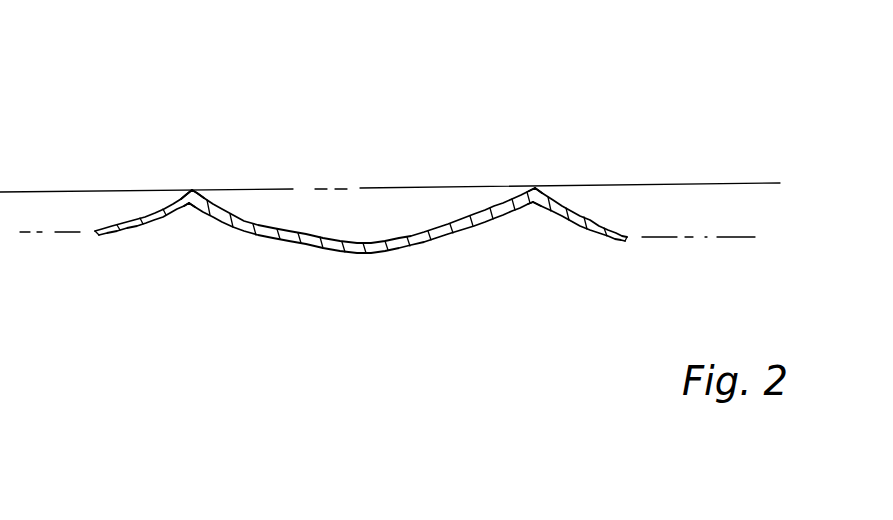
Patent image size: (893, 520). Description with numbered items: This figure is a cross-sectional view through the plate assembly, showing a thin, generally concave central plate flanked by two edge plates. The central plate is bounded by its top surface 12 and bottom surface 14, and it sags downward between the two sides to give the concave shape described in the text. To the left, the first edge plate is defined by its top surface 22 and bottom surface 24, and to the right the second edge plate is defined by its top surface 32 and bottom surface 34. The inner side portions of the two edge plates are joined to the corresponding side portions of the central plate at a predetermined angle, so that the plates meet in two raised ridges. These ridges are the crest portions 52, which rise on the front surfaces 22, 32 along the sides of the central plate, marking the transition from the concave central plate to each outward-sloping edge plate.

The top surface of central plate 12 is at (485, 210).
The bottom surface of central plate 14 is at (478, 229).
The top surface of first edge plate 22 is at (140, 222).
The bottom surface of first edge plate 24 is at (140, 233).
The top surface of second edge plate 32 is at (583, 212).
The bottom surface of second edge plate 34 is at (587, 229).
The crest portion 52 is at (192, 190).